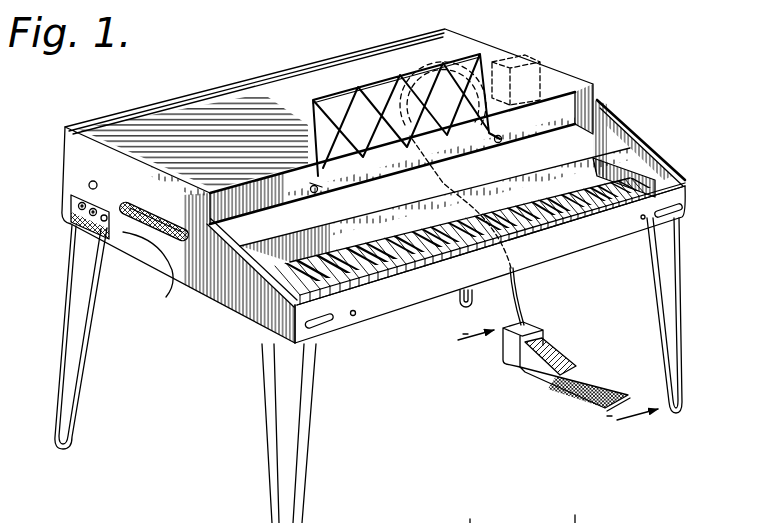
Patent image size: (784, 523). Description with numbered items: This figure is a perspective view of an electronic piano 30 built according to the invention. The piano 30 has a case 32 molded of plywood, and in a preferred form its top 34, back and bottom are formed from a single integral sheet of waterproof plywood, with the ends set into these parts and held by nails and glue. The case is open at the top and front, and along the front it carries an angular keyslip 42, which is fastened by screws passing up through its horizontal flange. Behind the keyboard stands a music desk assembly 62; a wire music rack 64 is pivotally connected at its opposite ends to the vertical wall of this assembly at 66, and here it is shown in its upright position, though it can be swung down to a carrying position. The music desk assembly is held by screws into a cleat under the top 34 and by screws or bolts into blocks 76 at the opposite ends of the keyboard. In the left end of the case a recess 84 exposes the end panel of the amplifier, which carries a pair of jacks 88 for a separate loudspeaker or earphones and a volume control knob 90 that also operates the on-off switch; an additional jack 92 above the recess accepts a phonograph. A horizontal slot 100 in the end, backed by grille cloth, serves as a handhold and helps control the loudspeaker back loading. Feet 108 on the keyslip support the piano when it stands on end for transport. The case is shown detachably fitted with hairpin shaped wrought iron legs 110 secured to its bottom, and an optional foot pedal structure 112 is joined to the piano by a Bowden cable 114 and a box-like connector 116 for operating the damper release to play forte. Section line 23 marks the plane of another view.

The electronic piano 30 is at (580, 76).
The case 32 is at (485, 42).
The top 34 is at (268, 92).
The keyslip 42 is at (383, 313).
The music desk assembly 62 is at (552, 117).
The wire music rack 64 is at (381, 80).
The pivotal connection 66 is at (310, 192).
The blocks 76 is at (250, 323).
The recess 84 is at (76, 225).
The jacks 88 is at (72, 204).
The volume control knob 90 is at (86, 211).
The additional jack 92 is at (89, 184).
The horizontal slots 100 is at (168, 280).
The feet 108 is at (323, 350).
The hairpin shaped wrought iron legs 110 is at (63, 366).
The foot pedal structure 112 is at (547, 355).
The Bowden cable 114 is at (527, 310).
The box-like connector 116 is at (568, 40).
The section line 23 is at (549, 382).